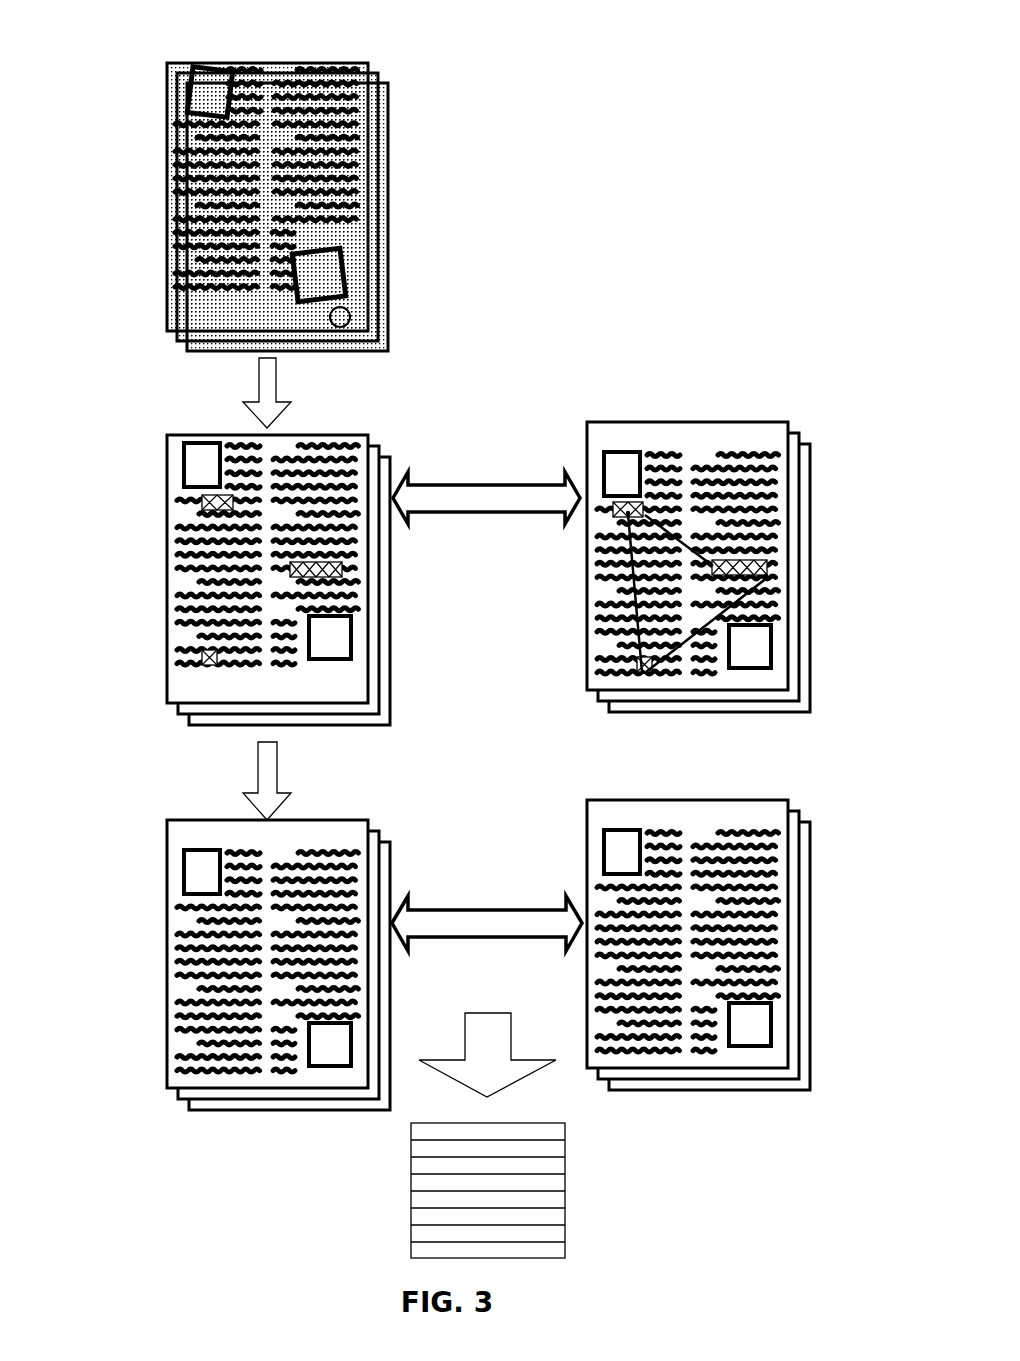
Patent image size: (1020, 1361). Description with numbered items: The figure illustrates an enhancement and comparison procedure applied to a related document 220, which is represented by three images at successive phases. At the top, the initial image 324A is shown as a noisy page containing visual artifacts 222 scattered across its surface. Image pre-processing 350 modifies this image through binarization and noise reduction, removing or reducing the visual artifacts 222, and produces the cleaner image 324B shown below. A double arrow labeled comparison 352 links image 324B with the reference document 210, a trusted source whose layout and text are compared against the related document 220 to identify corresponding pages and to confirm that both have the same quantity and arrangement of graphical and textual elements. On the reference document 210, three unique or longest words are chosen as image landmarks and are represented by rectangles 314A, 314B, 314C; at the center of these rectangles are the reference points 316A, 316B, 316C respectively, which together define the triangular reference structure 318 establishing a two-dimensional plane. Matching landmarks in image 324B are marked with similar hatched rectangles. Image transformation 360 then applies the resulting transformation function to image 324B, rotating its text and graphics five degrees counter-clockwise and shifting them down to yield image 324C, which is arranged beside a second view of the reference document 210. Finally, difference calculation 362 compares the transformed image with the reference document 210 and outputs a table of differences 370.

The related document 220 is at (277, 186).
The image 324A is at (170, 110).
The visual artifacts 222 is at (350, 316).
The image pre-processing 350 is at (260, 393).
The image 324B is at (170, 456).
The comparison 352 is at (486, 473).
The reference document 210 is at (686, 734).
The reference structure 318 is at (682, 528).
The rectangle 314A is at (612, 512).
The rectangle 314B is at (745, 562).
The rectangle 314C is at (646, 674).
The reference point 316A is at (618, 515).
The reference point 316B is at (765, 578).
The reference point 316C is at (640, 676).
The image transformation 360 is at (275, 781).
The image 324C is at (170, 836).
The difference calculation 362 is at (487, 996).
The differences 370 is at (488, 1190).